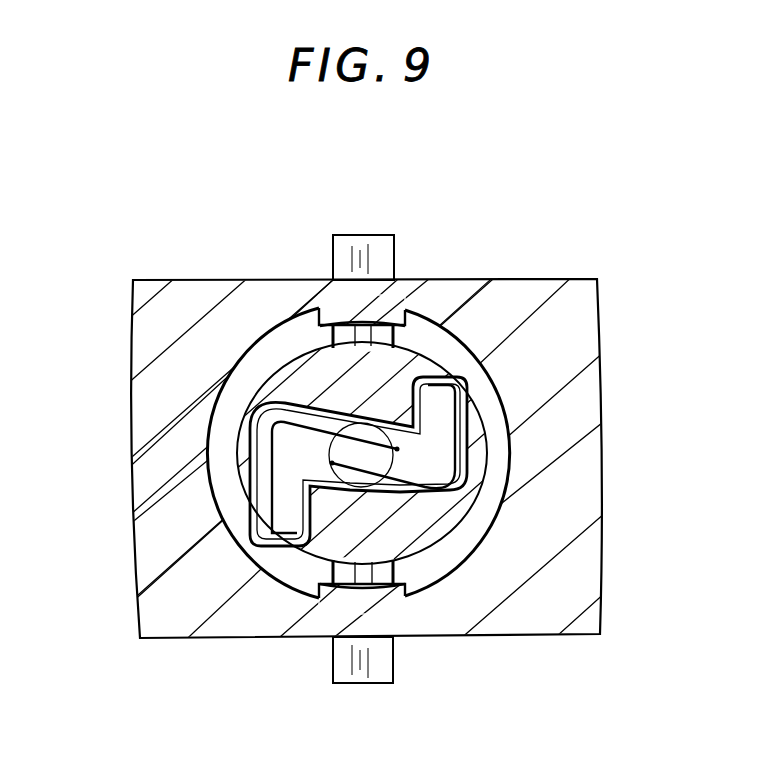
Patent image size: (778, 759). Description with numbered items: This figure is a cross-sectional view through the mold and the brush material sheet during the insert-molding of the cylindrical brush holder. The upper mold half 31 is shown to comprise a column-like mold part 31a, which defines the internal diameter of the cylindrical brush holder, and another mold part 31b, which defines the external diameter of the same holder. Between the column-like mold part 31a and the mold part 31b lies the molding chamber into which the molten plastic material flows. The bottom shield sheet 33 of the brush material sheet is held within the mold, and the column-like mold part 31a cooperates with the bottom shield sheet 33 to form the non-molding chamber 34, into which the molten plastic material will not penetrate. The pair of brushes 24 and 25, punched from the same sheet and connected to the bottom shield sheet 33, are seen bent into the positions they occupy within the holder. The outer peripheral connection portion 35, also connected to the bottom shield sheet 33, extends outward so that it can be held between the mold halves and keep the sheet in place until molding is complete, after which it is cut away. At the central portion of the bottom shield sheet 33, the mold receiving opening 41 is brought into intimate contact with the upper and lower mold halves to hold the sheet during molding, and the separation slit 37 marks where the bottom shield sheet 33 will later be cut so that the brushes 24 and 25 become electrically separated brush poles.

The upper mold half 31 is at (513, 262).
The column-like mold part 31a is at (313, 380).
The mold part 31b is at (575, 424).
The bottom shield sheet 33 is at (403, 497).
The non-molding chamber 34 is at (453, 489).
The outer peripheral connection portion 35 is at (378, 253).
The separation slit 37 is at (363, 578).
The mold receiving opening 41 is at (373, 492).
The brush 24 is at (398, 448).
The brush 25 is at (330, 462).